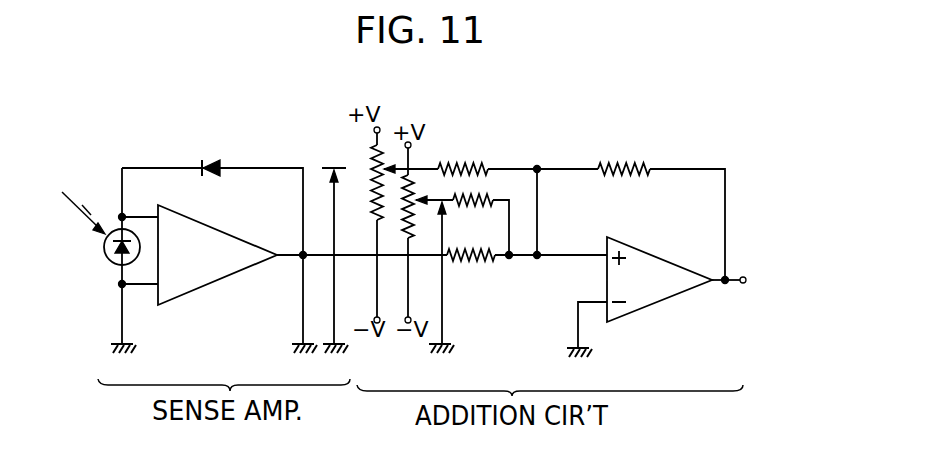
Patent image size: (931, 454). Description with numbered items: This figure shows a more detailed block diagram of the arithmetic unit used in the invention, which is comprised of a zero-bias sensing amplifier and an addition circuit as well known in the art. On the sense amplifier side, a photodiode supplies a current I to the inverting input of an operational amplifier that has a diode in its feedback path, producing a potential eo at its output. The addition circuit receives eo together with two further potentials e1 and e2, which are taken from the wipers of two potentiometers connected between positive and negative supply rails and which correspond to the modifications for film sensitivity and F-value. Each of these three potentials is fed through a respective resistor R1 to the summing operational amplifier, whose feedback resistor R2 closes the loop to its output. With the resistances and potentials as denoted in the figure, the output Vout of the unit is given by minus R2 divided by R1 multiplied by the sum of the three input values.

The photoelectric transducer current I is at (107, 260).
The sense amplifier output voltage eo is at (303, 267).
The first potential e1 is at (340, 245).
The second potential e2 is at (431, 272).
The input resistors R1 is at (449, 176).
The feedback resistor R2 is at (625, 166).
The output of the unit Vout is at (764, 280).